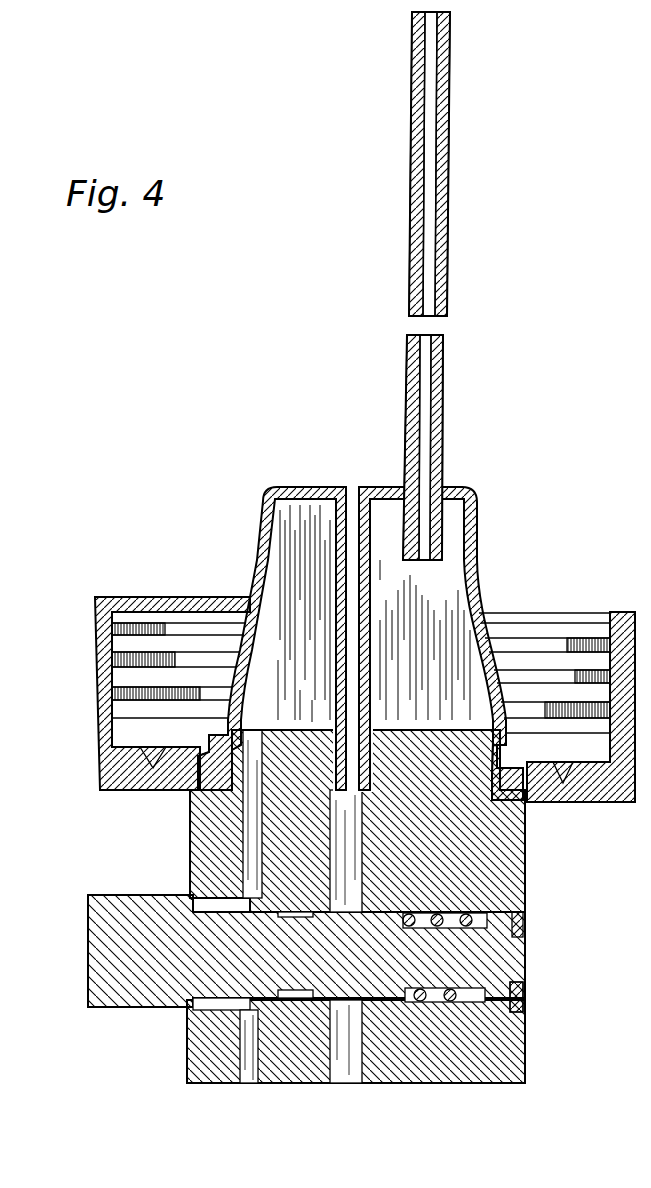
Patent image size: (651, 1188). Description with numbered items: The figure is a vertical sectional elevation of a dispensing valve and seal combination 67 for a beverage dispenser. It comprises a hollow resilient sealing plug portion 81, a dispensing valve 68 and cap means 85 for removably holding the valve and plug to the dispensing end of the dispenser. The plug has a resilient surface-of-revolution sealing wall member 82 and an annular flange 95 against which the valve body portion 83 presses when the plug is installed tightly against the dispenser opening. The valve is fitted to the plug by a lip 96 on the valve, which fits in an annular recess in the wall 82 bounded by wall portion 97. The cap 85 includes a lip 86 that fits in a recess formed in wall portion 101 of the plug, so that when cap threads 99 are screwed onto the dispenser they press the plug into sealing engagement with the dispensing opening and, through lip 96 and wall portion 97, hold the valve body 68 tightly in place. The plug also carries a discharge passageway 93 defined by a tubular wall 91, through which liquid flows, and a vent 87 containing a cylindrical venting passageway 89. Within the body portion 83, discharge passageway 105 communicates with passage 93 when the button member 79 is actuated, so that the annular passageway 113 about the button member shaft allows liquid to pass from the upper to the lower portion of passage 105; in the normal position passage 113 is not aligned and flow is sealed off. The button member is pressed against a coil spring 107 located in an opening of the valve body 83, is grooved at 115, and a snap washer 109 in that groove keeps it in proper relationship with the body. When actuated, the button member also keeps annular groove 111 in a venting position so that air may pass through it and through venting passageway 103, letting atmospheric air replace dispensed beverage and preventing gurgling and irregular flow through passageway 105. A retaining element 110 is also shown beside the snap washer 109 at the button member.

The dispensing valve and seal combination 67 is at (529, 843).
The dispensing valve 68 is at (193, 895).
The button member 79 is at (88, 936).
The sealing plug portion 81 is at (481, 548).
The sealing wall member 82 is at (477, 600).
The body portion 83 is at (190, 845).
The cap means 85 is at (95, 712).
The lip 86 is at (255, 730).
The vent 87 is at (452, 170).
The venting passageway 89 is at (430, 415).
The tubular wall 91 is at (338, 610).
The discharge passageway 93 is at (352, 490).
The annular flange 95 is at (210, 790).
The lip 96 is at (228, 728).
The wall portion 97 is at (492, 733).
The cap threads 99 is at (510, 660).
The wall portion 101 is at (517, 758).
The venting passageway 103 is at (250, 1083).
The discharge passageway 105 is at (350, 1083).
The coil spring 107 is at (480, 925).
The snap washer 109 is at (524, 1003).
The lower O-ring seal 110 is at (470, 1000).
The annular groove 111 is at (205, 1008).
The annular passageway 113 is at (305, 1083).
The groove 115 is at (523, 985).